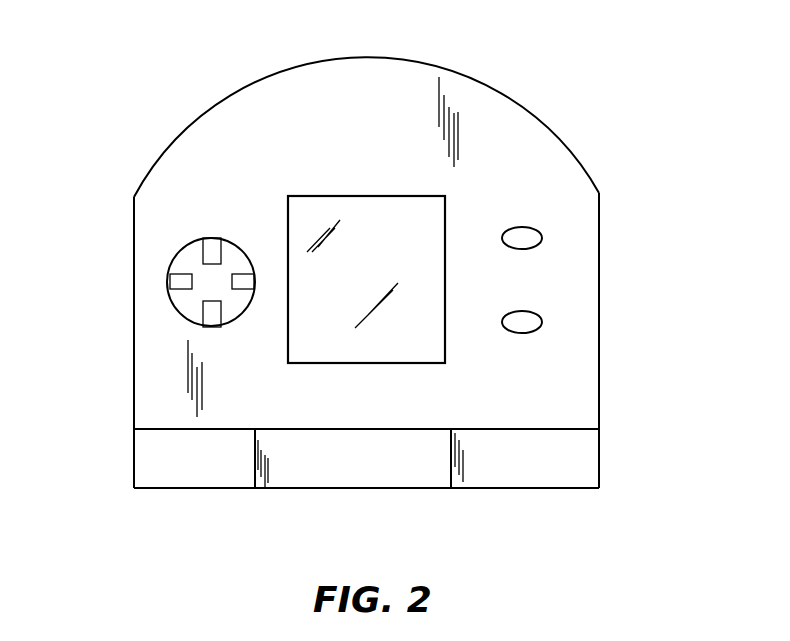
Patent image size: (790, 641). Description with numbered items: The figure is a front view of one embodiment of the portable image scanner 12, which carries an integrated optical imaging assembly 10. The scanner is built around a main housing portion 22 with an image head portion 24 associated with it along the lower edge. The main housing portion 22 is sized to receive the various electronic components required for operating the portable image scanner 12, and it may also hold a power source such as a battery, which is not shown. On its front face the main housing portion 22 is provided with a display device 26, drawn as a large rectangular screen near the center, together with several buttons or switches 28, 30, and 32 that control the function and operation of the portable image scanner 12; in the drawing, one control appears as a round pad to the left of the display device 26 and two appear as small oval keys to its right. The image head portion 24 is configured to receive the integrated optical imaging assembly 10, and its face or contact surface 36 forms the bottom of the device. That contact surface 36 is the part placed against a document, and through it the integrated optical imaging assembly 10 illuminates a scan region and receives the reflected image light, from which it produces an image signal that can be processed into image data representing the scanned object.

The integrated optical imaging assembly 10 is at (523, 502).
The portable image scanner 12 is at (148, 78).
The main housing portion 22 is at (363, 60).
The image head portion 24 is at (600, 457).
The display device 26 is at (367, 195).
The button or switch 28 is at (228, 237).
The button or switch 30 is at (521, 226).
The button or switch 32 is at (522, 333).
The face or contact surface 36 is at (162, 488).